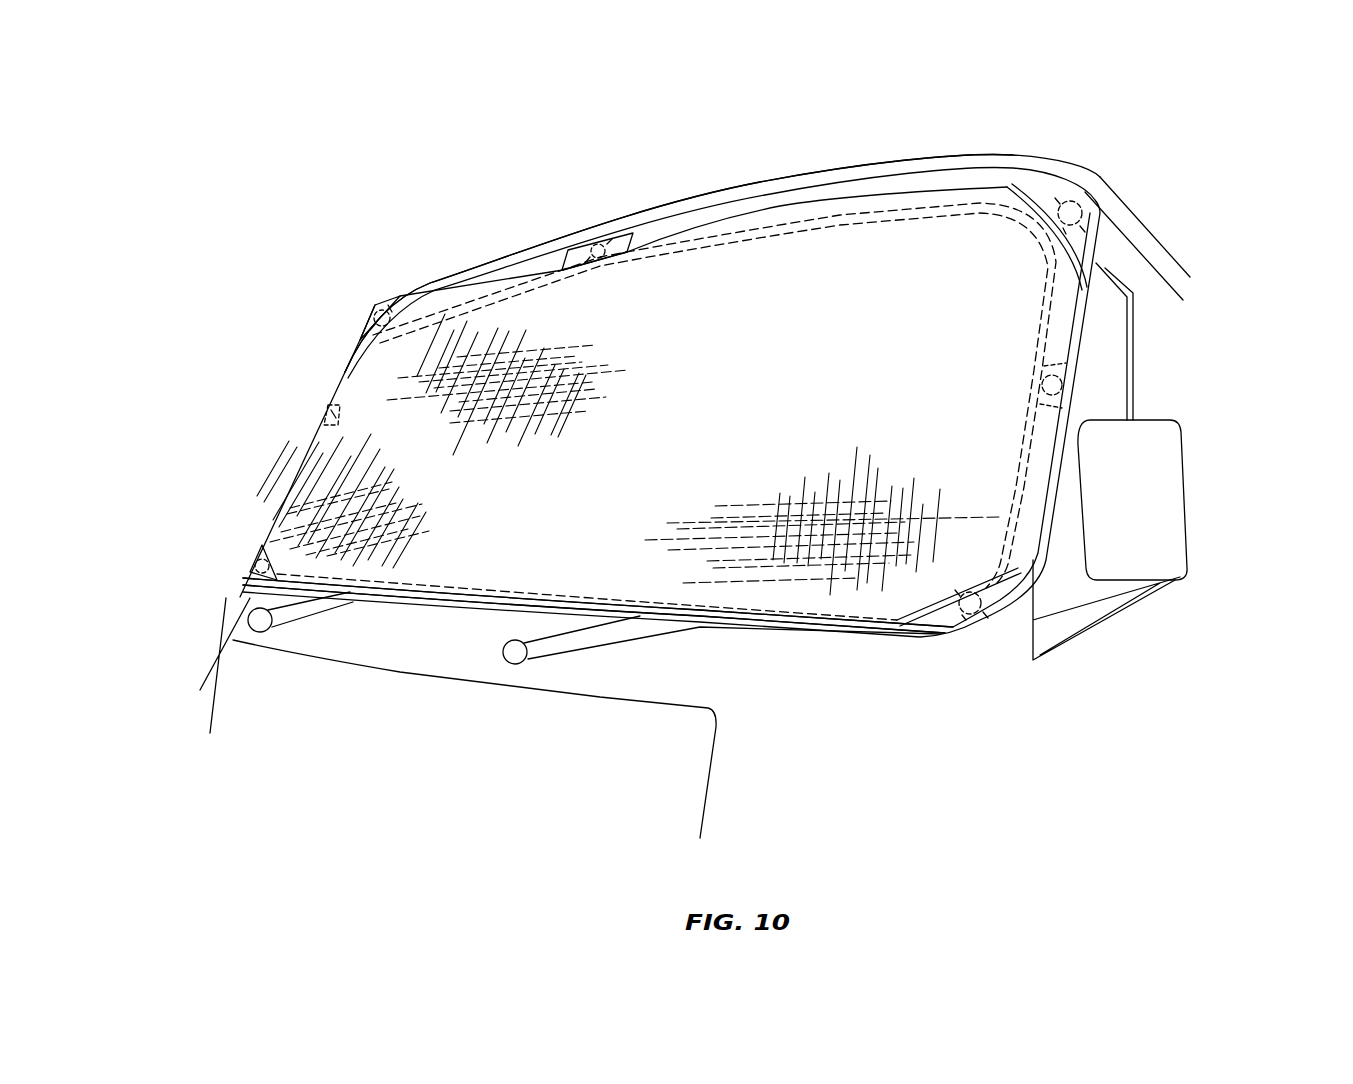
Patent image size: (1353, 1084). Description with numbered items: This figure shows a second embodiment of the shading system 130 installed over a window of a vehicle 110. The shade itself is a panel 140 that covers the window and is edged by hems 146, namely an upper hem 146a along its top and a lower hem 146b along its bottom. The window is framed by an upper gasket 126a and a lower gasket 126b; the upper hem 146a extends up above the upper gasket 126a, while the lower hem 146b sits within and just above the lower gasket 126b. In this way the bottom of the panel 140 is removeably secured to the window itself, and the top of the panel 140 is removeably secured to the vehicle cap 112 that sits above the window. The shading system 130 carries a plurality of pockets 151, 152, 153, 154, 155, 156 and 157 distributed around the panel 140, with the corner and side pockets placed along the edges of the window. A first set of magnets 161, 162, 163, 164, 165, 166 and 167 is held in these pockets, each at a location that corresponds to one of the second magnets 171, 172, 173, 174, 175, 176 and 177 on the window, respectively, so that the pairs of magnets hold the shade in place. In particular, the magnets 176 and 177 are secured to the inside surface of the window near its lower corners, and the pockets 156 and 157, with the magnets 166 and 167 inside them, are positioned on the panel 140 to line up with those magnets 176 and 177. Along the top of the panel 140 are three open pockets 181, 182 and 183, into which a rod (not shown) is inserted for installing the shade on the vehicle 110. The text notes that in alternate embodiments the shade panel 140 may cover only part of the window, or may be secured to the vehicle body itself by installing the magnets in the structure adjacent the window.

The vehicle 110 is at (527, 207).
The vehicle cap 112 is at (907, 168).
The upper gasket 126a is at (805, 218).
The lower gasket 126b is at (718, 628).
The shading system 130 is at (280, 483).
The panel 140 is at (660, 425).
The cowl 146 is at (317, 623).
The upper hem 146a is at (721, 198).
The lower hem 146b is at (510, 600).
The pocket 151 is at (296, 308).
The pocket 152 is at (657, 283).
The pocket 153 is at (1170, 225).
The pocket 154 is at (240, 406).
The pocket 155 is at (1160, 360).
The pocket 156 is at (191, 560).
The pocket 157 is at (1020, 628).
The first magnet 161 is at (296, 320).
The first magnet 162 is at (657, 283).
The first magnet 163 is at (1170, 237).
The first magnet 164 is at (240, 425).
The first magnet 165 is at (1160, 384).
The first magnet 166 is at (191, 569).
The first magnet 167 is at (1020, 628).
The second magnet 171 is at (401, 296).
The second magnet 172 is at (600, 262).
The second magnet 173 is at (1077, 223).
The second magnet 174 is at (330, 405).
The second magnet 175 is at (1056, 387).
The second magnet 176 is at (256, 567).
The second magnet 177 is at (997, 613).
The open pocket 181 is at (296, 290).
The open pocket 182 is at (657, 283).
The open pocket 183 is at (1170, 210).